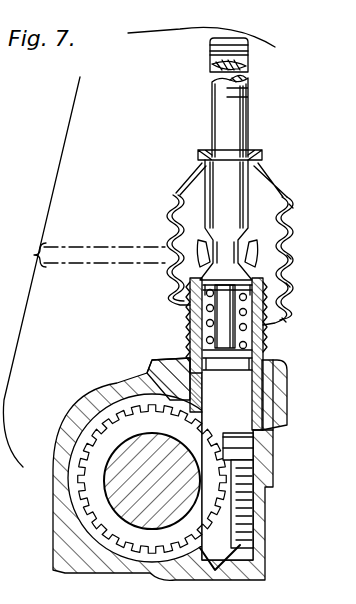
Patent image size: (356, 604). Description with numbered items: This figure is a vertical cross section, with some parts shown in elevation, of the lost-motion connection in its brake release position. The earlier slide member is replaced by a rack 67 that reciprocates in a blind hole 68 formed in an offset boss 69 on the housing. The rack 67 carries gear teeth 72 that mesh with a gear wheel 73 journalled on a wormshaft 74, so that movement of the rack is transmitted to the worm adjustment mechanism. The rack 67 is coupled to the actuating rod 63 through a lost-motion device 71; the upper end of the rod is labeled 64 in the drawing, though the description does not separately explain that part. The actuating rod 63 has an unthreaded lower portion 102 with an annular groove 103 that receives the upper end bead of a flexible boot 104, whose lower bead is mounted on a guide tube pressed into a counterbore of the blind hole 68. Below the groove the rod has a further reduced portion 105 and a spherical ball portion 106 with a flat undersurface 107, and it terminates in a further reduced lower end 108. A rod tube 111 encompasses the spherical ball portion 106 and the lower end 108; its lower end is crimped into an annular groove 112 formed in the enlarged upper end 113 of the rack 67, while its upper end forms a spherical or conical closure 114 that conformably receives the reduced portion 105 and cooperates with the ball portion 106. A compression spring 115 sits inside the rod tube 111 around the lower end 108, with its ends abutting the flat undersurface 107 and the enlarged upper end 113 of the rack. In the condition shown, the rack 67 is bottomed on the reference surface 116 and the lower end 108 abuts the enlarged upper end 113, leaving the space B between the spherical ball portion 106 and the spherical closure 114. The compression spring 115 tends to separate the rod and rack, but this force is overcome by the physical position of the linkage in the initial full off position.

The space B is at (93, 254).
The actuating rod 63 is at (293, 157).
The knob 64 is at (247, 100).
The rack 67 is at (258, 462).
The blind hole 68 is at (272, 428).
The offset boss 69 is at (287, 371).
The lost-motion device 71 is at (240, 250).
The gear teeth 72 is at (230, 540).
The gear wheel 73 is at (87, 447).
The wormshaft 74 is at (122, 460).
The unthreaded lower portion 102 is at (217, 192).
The annular groove 103 is at (240, 130).
The flexible boot 104 is at (178, 225).
The reduced portion 105 is at (287, 208).
The spherical ball portion 106 is at (287, 263).
The flat undersurface 107 is at (283, 325).
The lower end 108 is at (207, 287).
The rod tube 111 is at (178, 297).
The annular groove 112 is at (172, 372).
The enlarged upper end 113 is at (265, 392).
The spherical or conical closure 114 is at (203, 240).
The compression spring 115 is at (243, 297).
The reference surface 116 is at (233, 560).